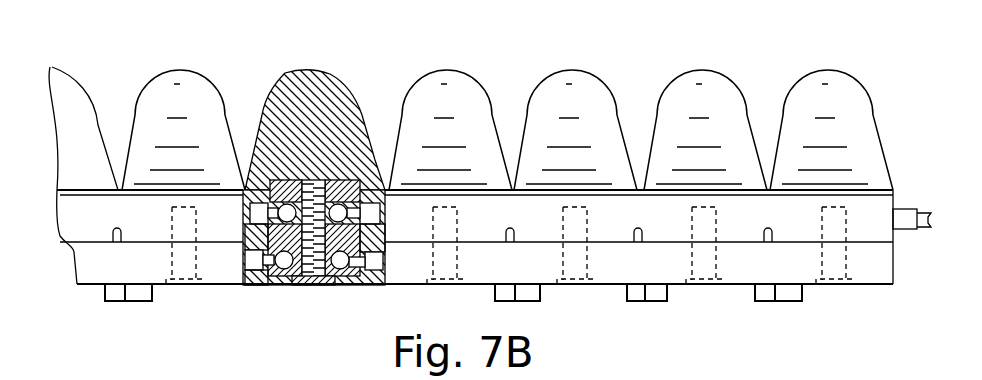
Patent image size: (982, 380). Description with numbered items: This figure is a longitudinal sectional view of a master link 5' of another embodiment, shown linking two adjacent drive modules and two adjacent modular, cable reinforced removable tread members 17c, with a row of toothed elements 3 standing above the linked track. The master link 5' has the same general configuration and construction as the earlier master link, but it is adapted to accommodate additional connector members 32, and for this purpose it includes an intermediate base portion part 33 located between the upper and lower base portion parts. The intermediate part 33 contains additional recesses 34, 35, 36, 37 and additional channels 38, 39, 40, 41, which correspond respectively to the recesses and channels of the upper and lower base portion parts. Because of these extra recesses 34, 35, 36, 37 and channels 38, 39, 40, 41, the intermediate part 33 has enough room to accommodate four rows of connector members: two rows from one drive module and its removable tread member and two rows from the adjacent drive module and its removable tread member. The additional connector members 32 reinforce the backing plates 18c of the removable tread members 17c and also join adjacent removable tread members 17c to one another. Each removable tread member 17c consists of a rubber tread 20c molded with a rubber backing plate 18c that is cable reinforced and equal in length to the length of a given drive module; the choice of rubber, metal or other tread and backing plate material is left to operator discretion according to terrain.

The finger 3 is at (185, 58).
The master link 5' is at (314, 155).
The removable tread member 17c is at (657, 303).
The backing plate 18c is at (605, 270).
The rubber tread 20c is at (787, 296).
The connector member 32 is at (256, 272).
The intermediate base portion part 33 is at (258, 228).
The recess 34 is at (300, 281).
The recess 35 is at (268, 280).
The recess 36 is at (341, 285).
The recess 37 is at (356, 284).
The channel 38 is at (249, 237).
The channel 39 is at (250, 258).
The channel 40 is at (384, 222).
The channel 41 is at (384, 240).